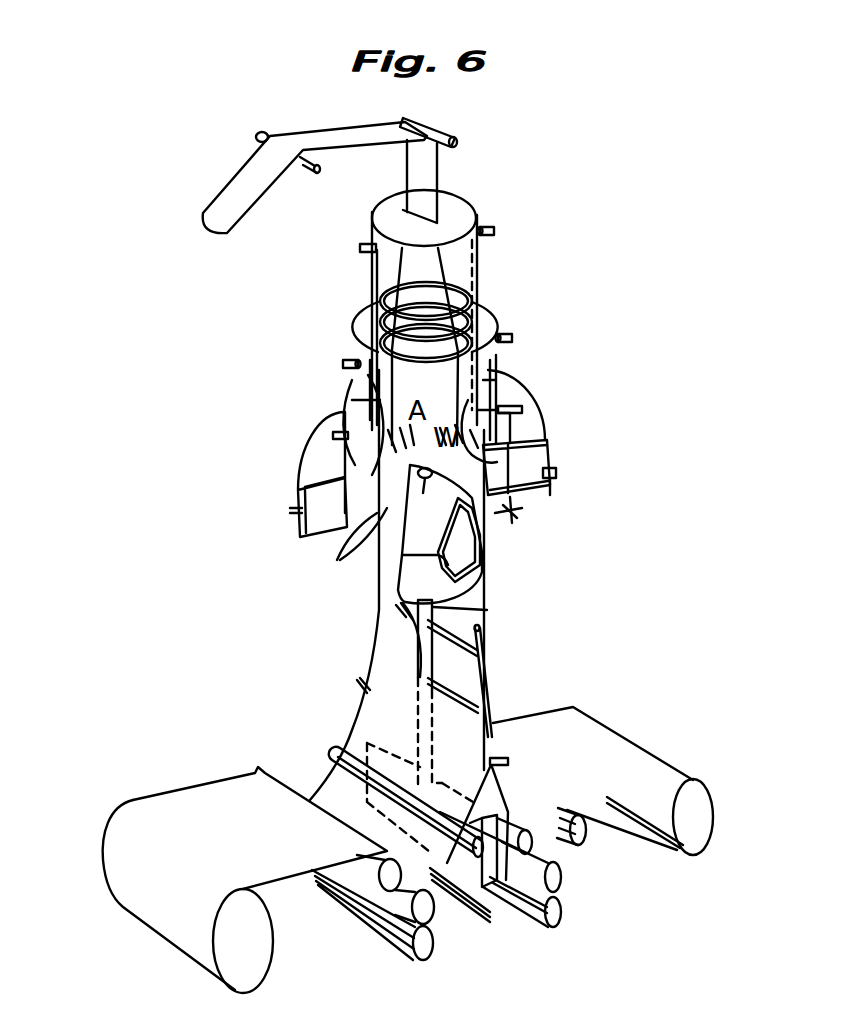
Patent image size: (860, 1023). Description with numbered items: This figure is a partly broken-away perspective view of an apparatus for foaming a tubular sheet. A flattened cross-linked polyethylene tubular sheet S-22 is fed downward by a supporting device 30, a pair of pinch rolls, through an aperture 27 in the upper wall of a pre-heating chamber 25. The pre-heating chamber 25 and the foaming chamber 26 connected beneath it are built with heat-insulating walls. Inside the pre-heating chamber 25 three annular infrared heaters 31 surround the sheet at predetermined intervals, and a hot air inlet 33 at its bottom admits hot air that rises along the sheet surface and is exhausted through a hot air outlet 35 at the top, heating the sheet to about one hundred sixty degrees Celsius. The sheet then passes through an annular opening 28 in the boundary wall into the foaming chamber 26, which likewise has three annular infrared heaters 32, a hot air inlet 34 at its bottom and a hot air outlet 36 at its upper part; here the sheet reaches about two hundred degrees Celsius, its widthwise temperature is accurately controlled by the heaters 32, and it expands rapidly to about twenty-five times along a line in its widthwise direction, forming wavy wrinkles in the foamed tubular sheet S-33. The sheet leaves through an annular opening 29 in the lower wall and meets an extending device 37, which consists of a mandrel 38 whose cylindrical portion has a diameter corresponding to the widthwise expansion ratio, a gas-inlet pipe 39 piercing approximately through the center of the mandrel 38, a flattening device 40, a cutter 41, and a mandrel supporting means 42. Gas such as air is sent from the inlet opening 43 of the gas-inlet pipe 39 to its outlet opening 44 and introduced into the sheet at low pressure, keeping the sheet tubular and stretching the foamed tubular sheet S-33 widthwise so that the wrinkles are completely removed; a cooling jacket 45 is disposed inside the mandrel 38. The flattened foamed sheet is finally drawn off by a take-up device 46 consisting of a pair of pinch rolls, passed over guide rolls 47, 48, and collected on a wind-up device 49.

The cross-linked polyethylene tubular sheet S-22 is at (338, 137).
The supporting device 30 is at (437, 130).
The aperture 27 is at (437, 212).
The pre-heating chamber 25 is at (473, 282).
The annular infrared heaters 31 is at (376, 298).
The hot air outlet 35 is at (494, 232).
The hot air inlet 33 is at (512, 337).
The annular opening 28 is at (492, 376).
The hot air outlet 36 is at (522, 405).
The foaming chamber 26 is at (498, 452).
The hot air inlet 34 is at (558, 472).
The annular opening 29 is at (522, 518).
The annular infrared heaters 32 is at (345, 418).
The foamed tubular sheet S-33 is at (387, 508).
The outlet opening 44 is at (428, 498).
The mandrel 38 is at (482, 578).
The cooling jacket 45 is at (482, 540).
The extending device 37 is at (467, 613).
The gas-inlet pipe 39 is at (427, 647).
The flattening device 40 is at (483, 658).
The cutter 41 is at (500, 758).
The mandrel supporting means 42 is at (490, 883).
The inlet opening 43 is at (492, 920).
The guide roll 47 is at (515, 830).
The take-up device 46 is at (557, 872).
The guide roll 48 is at (567, 810).
The wind-up device 49 is at (700, 800).